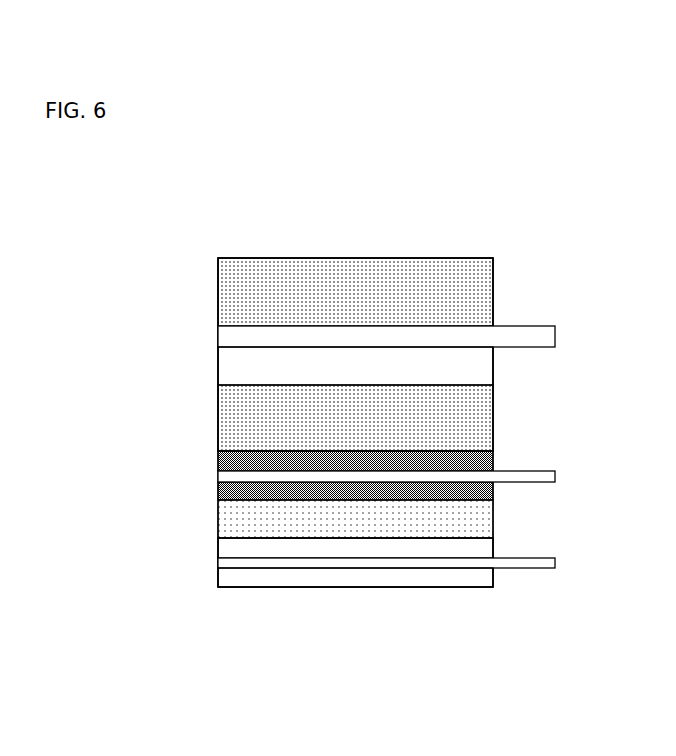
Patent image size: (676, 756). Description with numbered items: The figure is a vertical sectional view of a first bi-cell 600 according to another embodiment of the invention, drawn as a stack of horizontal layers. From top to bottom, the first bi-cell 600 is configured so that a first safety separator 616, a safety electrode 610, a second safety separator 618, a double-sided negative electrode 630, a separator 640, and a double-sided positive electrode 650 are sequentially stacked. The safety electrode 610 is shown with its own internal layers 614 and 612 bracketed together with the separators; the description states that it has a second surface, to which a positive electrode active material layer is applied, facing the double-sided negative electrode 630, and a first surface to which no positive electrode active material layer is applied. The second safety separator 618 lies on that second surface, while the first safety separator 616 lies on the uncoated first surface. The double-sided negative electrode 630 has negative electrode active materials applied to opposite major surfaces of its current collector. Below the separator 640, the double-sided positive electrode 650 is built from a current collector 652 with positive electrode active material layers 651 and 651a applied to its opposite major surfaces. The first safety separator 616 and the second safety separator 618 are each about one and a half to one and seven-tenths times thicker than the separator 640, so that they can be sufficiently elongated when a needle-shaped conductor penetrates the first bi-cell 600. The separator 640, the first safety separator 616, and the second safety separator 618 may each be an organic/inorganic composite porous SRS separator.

The first bi-cell 600 is at (254, 204).
The safety electrode 610 is at (103, 254).
The first safety separator 616 is at (218, 300).
The organic light emitting element layer 614 is at (218, 336).
The thin film transistor layer 612 is at (218, 368).
The second safety separator 618 is at (218, 401).
The double-sided negative electrode 630 is at (217, 455).
The separator 640 is at (494, 517).
The double-sided positive electrode 650 is at (132, 692).
The positive electrode active material layer 651 is at (218, 550).
The current collector 652 is at (218, 562).
The positive electrode active material layer 651a is at (230, 587).